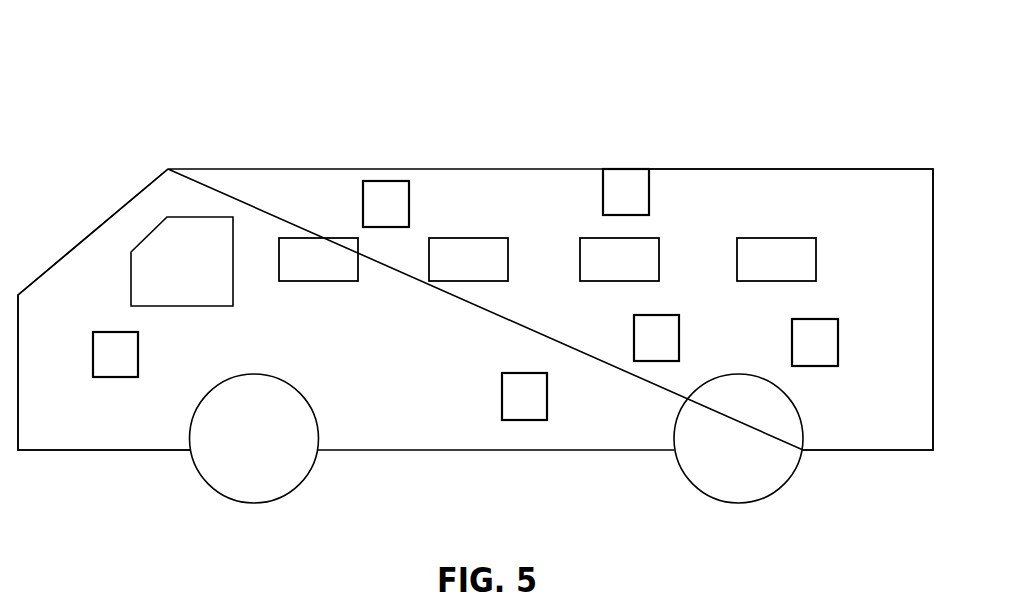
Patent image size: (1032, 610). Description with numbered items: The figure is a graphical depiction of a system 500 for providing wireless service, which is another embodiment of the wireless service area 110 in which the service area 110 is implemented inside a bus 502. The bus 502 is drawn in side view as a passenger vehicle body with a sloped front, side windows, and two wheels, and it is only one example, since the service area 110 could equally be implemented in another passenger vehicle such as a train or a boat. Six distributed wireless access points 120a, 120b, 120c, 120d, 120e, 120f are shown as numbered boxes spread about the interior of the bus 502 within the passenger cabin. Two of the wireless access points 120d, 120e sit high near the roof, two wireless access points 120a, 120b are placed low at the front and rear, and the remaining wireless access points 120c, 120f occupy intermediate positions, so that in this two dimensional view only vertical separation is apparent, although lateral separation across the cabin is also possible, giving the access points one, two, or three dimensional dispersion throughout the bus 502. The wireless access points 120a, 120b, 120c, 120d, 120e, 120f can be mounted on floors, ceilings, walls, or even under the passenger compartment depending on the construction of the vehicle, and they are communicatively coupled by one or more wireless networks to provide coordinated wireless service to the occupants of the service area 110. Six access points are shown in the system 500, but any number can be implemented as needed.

The system 500 is at (335, 50).
The wireless service area 110 is at (243, 178).
The bus 502 is at (793, 169).
The wireless access point 120a is at (111, 335).
The wireless access point 120b is at (813, 338).
The wireless access point 120c is at (515, 402).
The wireless access point 120d is at (397, 190).
The wireless access point 120e is at (630, 173).
The wireless access point 120f is at (642, 333).